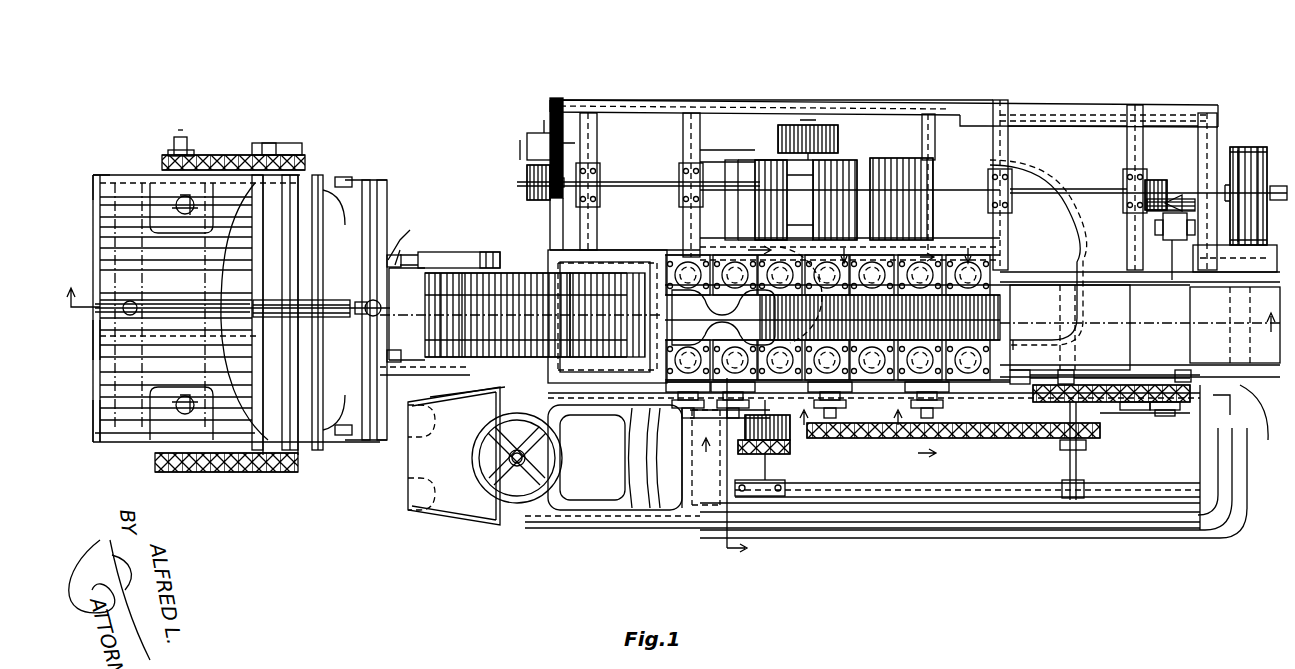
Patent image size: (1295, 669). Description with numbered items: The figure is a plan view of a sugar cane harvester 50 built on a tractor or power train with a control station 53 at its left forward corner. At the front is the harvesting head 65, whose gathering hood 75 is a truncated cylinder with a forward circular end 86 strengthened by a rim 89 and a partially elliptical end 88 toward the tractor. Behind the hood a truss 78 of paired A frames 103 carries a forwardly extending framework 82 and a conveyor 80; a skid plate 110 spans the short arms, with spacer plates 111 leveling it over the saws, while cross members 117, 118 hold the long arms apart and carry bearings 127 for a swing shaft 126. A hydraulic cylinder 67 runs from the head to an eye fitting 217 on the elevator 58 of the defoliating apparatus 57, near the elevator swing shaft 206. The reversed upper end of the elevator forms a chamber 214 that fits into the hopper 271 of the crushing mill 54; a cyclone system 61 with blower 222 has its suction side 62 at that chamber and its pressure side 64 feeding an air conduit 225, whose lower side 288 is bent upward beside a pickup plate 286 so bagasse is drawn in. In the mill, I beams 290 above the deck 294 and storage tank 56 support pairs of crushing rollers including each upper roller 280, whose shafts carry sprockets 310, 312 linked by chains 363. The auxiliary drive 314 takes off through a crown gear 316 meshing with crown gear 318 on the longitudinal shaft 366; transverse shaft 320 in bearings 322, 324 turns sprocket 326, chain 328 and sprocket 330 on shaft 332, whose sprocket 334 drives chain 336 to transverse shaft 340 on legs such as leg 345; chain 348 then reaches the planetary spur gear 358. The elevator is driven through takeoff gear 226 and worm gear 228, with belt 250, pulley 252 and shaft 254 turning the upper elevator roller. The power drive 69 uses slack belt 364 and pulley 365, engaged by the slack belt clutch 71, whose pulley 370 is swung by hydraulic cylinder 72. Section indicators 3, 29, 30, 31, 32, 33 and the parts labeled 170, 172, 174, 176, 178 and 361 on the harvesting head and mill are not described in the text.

The section line 3- 3 is at (669, 301).
The section line 29- 29 is at (708, 457).
The section line 30- 30 is at (753, 399).
The section line 31- 31 is at (855, 410).
The section line 32- 32 is at (899, 271).
The section line 33- 33 is at (938, 357).
The sugar cane harvester 50 is at (548, 118).
The control station 53 is at (478, 535).
The crushing or grinding mill 54 is at (722, 257).
The storage juice tank 56 is at (1168, 535).
The defoliating apparatus 57 is at (545, 280).
The elevator 58 is at (508, 283).
The cyclone system 61 is at (837, 175).
The suction side 62 is at (805, 250).
The pressure side 64 is at (870, 185).
The harvesting head 65 is at (133, 178).
The hydraulic cylinder 67 is at (340, 300).
The power drive 69 is at (1283, 125).
The slack belt clutch 71 is at (1272, 245).
The hydraulic cylinder 72 is at (1240, 385).
The gathering hood 75 is at (100, 335).
The truss 78 is at (320, 455).
The conveyor 80 is at (263, 473).
The framework 82 is at (375, 180).
The circular end 86 is at (88, 412).
The partially elliptical end 88 is at (222, 290).
The rim 89 is at (95, 175).
The A frame 103 is at (390, 440).
The skid plate 110 is at (320, 327).
The spacer plates 111 is at (341, 312).
The cross member 117 is at (297, 455).
The cross member 118 is at (252, 341).
The swing shaft 126 is at (270, 145).
The bearings 127 is at (305, 175).
The bearing 170 is at (285, 150).
The bolt 172 is at (180, 137).
The gear 174 is at (186, 150).
The upper rail 176 is at (238, 144).
The gear 178 is at (170, 415).
The elevator swing shaft 206 is at (540, 136).
The bottomless chamber 214 is at (635, 262).
The eye fitting 217 is at (392, 260).
The blower 222 is at (778, 172).
The air conduit 225 is at (1265, 415).
The takeoff gear 226 is at (520, 182).
The worm gear 228 is at (527, 170).
The belt 250 is at (452, 254).
The pulley 252 is at (480, 252).
The shaft 254 is at (485, 252).
The hopper 271 is at (655, 262).
The upper roller 280 is at (822, 300).
The pickup plate 286 is at (1013, 345).
The lower side 288 is at (1112, 340).
The I beams 290 is at (1030, 375).
The deck 294 is at (1107, 140).
The sprocket 310 is at (818, 400).
The sprocket 312 is at (830, 435).
The auxiliary drive 314 is at (1155, 484).
The crown gear 316 is at (1150, 212).
The crown gear 318 is at (1152, 190).
The transverse shaft 320 is at (1165, 405).
The bearing 322 is at (1165, 242).
The bearing 324 is at (1183, 380).
The sprocket 326 is at (1158, 405).
The endless chain 328 is at (1128, 405).
The sprocket 330 is at (1090, 398).
The shaft 332 is at (1068, 462).
The sprocket 334 is at (1098, 432).
The endless chain 336 is at (1000, 440).
The transverse shaft 340 is at (757, 500).
The leg 345 is at (950, 485).
The endless chain 348 is at (812, 478).
The planetary spur gear 358 is at (790, 440).
The plate 361 is at (785, 320).
The endless chains 363 is at (715, 370).
The slack belt 364 is at (1250, 147).
The pulley 365 is at (1232, 147).
The shaft 366 is at (1108, 192).
The pulley 370 is at (1232, 285).